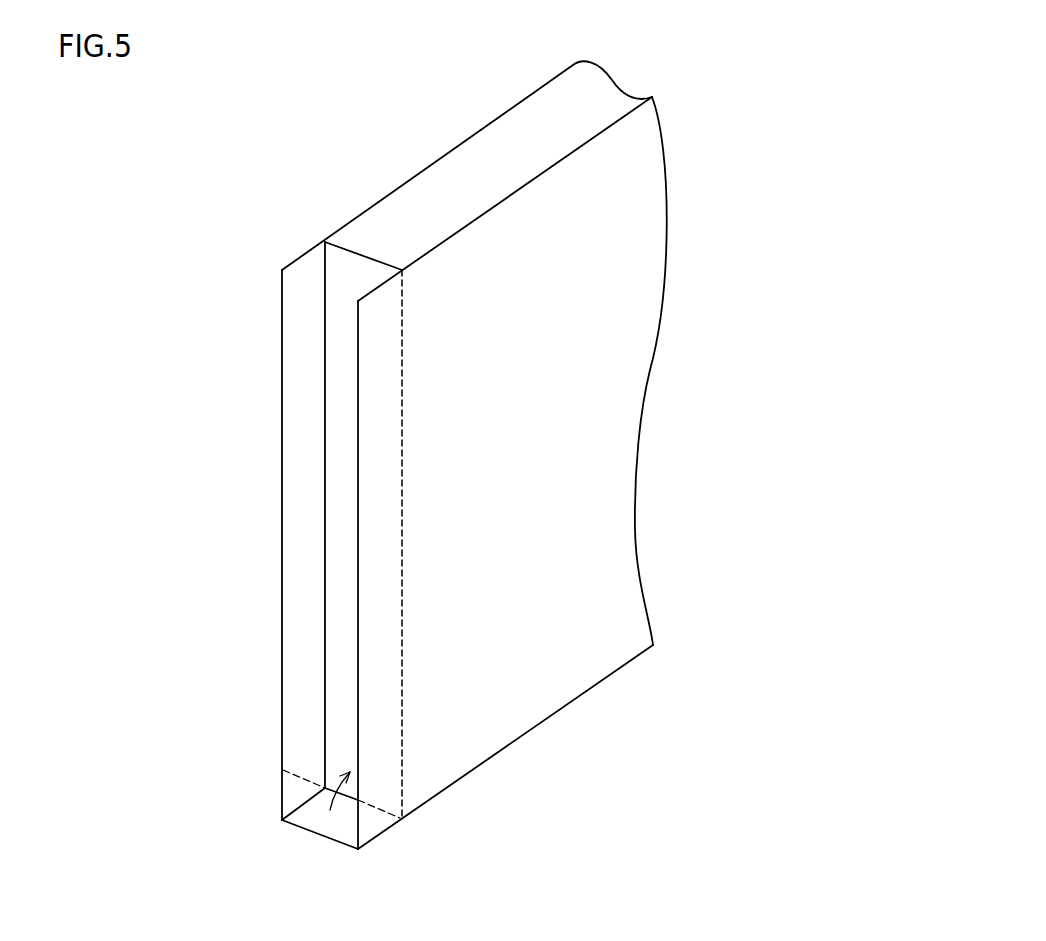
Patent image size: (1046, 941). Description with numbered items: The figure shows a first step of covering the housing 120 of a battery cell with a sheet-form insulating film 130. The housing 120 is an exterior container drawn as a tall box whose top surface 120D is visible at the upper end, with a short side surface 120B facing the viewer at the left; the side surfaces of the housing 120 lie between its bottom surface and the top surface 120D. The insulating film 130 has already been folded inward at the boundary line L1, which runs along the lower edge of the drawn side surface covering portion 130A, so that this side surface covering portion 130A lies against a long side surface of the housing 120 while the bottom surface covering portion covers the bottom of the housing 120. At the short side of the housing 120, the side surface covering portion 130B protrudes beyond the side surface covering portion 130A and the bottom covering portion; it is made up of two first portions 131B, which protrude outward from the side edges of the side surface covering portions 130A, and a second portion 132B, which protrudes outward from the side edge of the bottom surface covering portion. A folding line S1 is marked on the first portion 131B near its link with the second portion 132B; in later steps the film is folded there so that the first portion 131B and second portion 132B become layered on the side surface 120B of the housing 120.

The housing 120 is at (340, 303).
The side surface 120B is at (345, 405).
The top surface 120D is at (487, 155).
The insulating film 130 is at (648, 283).
The side surface covering portion 130A is at (563, 471).
The side surface covering portion 130B is at (164, 670).
The first portion 131B is at (303, 657).
The second portion 132B is at (322, 813).
The folding line S1 is at (302, 773).
The boundary line L1 is at (522, 736).